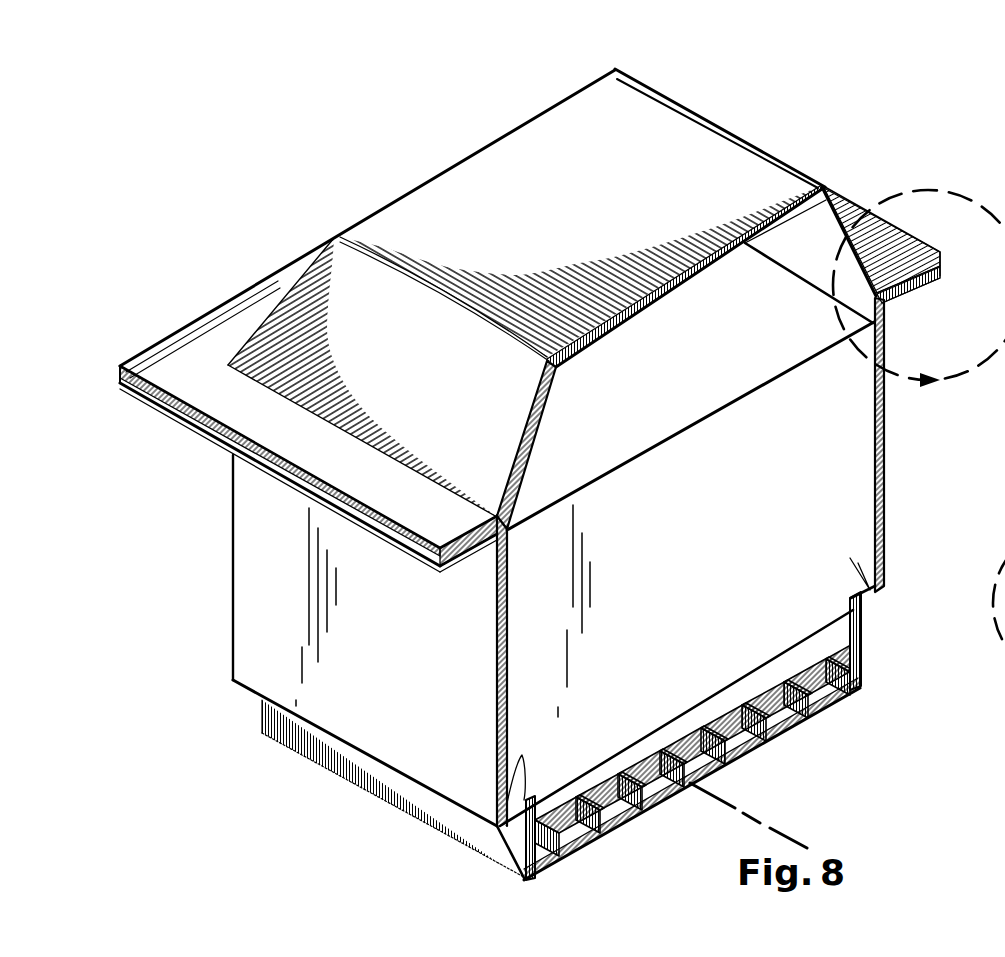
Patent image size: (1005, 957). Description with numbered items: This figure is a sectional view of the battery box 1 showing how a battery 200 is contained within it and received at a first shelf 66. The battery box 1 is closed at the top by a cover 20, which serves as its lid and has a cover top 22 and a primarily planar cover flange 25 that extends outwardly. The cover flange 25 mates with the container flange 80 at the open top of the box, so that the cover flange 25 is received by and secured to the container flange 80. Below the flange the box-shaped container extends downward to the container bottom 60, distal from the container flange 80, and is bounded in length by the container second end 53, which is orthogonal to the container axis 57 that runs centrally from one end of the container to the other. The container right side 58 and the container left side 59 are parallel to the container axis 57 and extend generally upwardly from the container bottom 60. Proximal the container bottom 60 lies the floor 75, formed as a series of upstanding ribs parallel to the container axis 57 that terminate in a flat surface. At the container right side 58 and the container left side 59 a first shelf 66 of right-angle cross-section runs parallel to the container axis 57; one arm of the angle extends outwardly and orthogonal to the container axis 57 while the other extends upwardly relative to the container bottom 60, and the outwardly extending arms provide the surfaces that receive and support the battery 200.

The battery box 1 is at (838, 130).
The cover 20 is at (343, 268).
The cover top 22 is at (388, 233).
The cover flange 25 is at (154, 364).
The container second end 53 is at (233, 554).
The container axis 57 is at (784, 828).
The container right side 58 is at (393, 724).
The container left side 59 is at (887, 536).
The container bottom 60 is at (500, 866).
The first shelf 66 is at (517, 763).
The floor 75 is at (570, 778).
The container flange 80 is at (458, 566).
The battery 200 is at (795, 498).